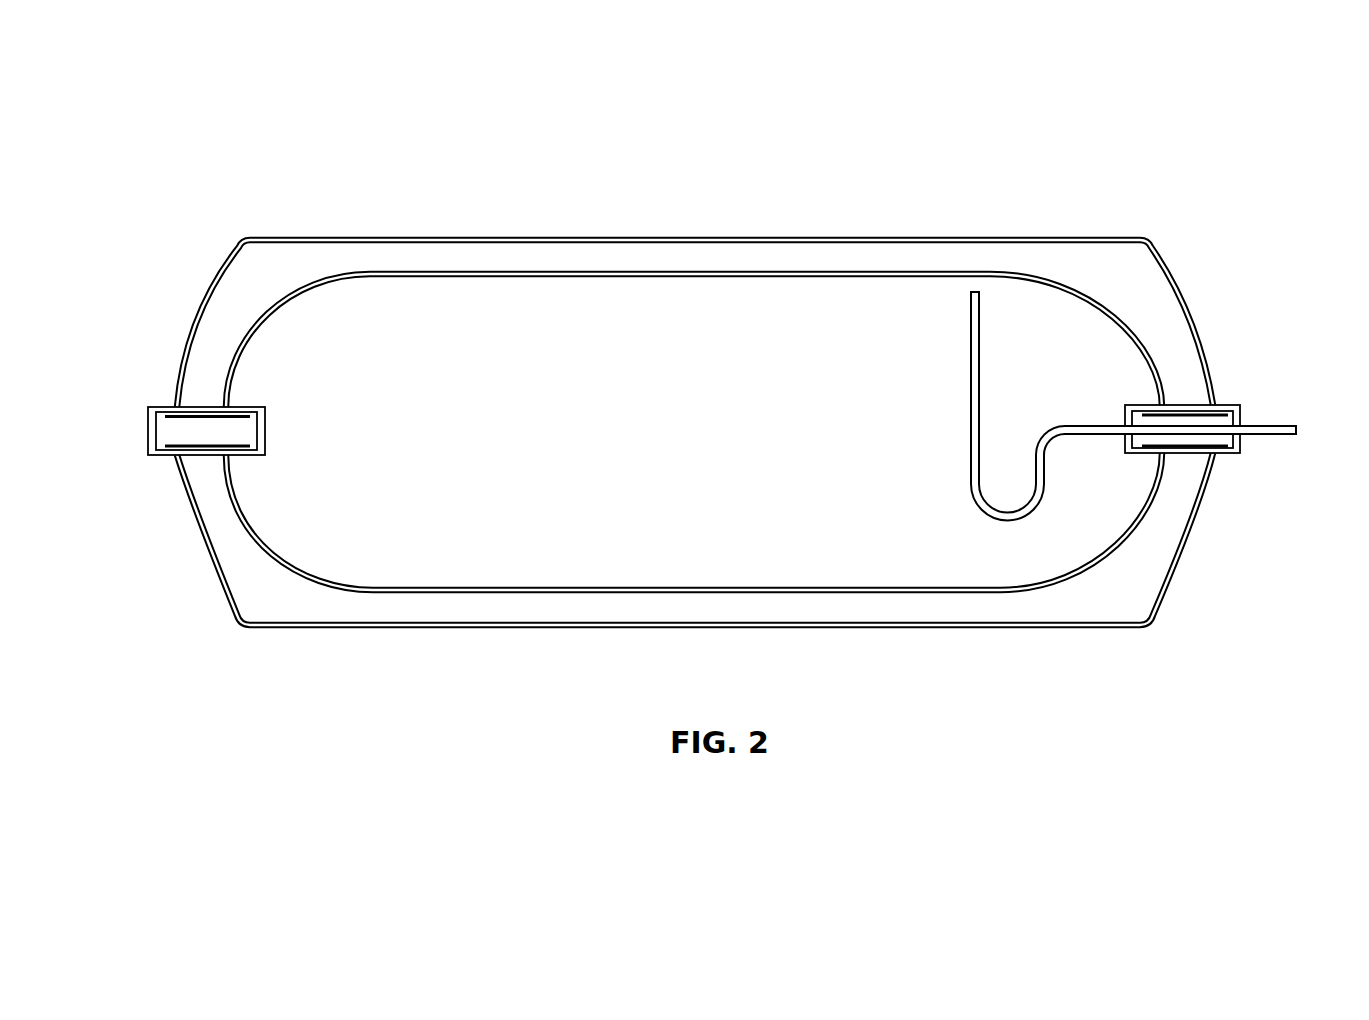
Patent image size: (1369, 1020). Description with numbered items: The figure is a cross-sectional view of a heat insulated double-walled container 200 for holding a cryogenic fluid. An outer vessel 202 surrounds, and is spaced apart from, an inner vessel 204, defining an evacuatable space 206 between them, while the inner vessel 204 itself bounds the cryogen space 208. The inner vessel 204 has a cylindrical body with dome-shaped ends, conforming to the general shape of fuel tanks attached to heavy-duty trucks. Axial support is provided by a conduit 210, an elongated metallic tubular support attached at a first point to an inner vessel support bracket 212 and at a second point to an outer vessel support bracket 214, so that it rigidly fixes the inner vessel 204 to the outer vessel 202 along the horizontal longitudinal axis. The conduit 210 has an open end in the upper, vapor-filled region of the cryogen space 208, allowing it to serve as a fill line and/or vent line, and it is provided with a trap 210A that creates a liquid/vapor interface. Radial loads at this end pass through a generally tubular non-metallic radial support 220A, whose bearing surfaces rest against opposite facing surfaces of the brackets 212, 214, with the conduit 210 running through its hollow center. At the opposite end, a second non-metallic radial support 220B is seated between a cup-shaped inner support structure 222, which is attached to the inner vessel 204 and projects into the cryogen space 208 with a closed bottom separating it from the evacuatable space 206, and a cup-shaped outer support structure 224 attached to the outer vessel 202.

The heat insulated double-walled container 200 is at (703, 366).
The outer vessel 202 is at (802, 237).
The inner vessel 204 is at (737, 275).
The evacuatable space 206 is at (287, 603).
The cryogen space 208 is at (632, 437).
The conduit 210 is at (1262, 437).
The trap 210A is at (1037, 500).
The inner vessel support bracket 212 is at (1163, 403).
The outer vessel support bracket 214 is at (1240, 405).
The non-metallic radial support 220A is at (1187, 412).
The second non-metallic radial support 220B is at (202, 407).
The cup-shaped inner support structure 222 is at (244, 405).
The cup-shaped outer support structure 224 is at (157, 407).